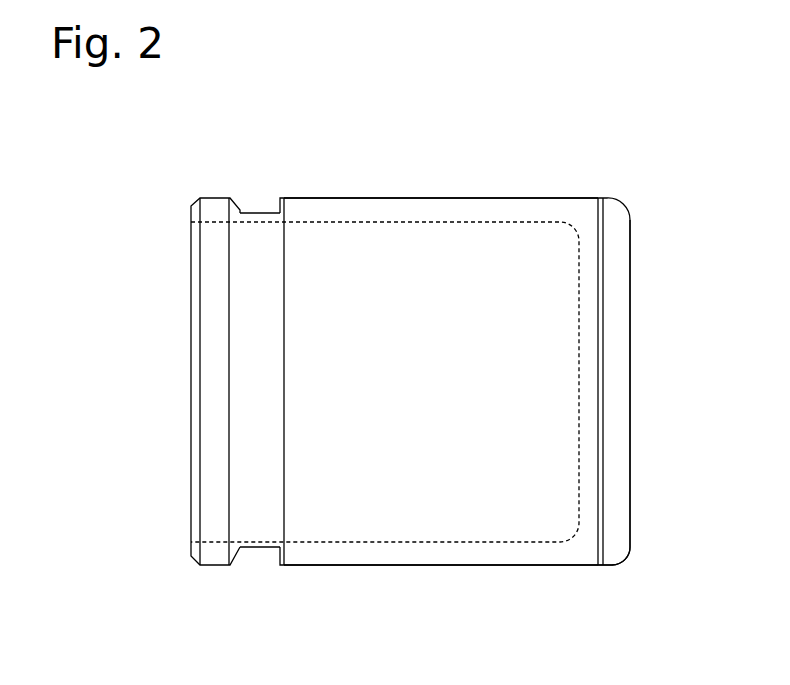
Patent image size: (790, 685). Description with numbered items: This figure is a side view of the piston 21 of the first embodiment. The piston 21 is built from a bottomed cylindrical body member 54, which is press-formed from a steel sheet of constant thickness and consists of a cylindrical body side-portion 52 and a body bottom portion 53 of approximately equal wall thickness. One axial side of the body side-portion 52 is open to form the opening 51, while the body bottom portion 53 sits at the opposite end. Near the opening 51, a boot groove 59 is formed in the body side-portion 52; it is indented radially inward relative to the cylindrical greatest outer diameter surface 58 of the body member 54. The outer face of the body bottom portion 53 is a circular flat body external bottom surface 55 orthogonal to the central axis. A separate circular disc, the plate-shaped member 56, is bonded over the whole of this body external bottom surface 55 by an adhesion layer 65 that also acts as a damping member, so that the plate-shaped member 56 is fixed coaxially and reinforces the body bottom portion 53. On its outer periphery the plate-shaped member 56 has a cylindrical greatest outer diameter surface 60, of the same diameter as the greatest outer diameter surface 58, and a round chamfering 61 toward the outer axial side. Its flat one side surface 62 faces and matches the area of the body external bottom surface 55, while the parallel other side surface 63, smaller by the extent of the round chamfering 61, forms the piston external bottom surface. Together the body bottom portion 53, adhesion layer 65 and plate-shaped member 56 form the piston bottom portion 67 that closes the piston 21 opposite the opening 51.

The piston 21 is at (623, 156).
The opening 51 is at (192, 233).
The body side-portion 52 is at (414, 210).
The body bottom portion 53 is at (590, 303).
The body member 54 is at (499, 193).
The body external bottom surface 55 is at (600, 343).
The plate-shaped member 56 is at (615, 385).
The greatest outer diameter surface 58 is at (356, 197).
The boot groove 59 is at (262, 212).
The greatest outer diameter surface 60 is at (606, 566).
The round chamfering 61 is at (621, 560).
The one side surface 62 is at (598, 472).
The other side surface 63 is at (632, 456).
The adhesion layer 65 is at (603, 416).
The piston bottom portion 67 is at (618, 497).